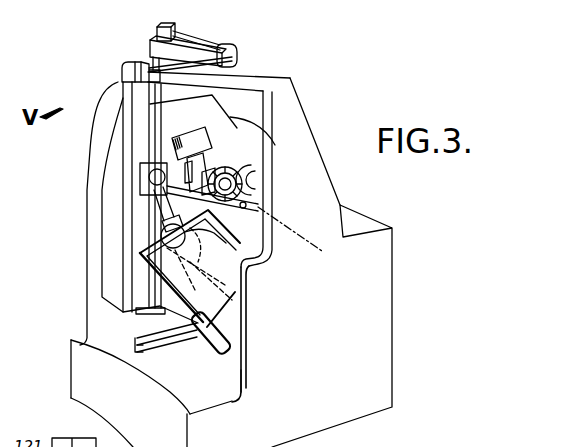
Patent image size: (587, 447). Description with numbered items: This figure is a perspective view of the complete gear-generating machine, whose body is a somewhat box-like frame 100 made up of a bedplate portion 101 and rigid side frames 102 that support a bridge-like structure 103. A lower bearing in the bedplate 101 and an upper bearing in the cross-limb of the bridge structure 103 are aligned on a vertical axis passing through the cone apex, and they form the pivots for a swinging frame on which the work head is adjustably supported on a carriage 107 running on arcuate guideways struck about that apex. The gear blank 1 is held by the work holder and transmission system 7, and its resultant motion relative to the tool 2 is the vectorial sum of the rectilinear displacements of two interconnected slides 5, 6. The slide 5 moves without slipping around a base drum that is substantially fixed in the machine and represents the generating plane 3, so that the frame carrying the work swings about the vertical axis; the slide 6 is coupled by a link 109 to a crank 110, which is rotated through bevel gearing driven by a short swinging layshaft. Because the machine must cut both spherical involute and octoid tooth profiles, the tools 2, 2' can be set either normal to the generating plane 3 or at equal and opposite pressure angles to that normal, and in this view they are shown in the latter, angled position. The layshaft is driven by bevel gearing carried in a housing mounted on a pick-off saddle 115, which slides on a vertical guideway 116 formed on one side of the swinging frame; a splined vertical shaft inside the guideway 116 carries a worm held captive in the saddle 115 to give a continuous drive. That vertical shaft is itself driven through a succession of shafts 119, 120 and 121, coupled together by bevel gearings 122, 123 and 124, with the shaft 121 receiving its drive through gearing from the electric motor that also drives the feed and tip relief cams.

The gear blank 1 is at (213, 208).
The tool 2 is at (248, 159).
The tool 2' is at (208, 147).
The generating plane 3 is at (250, 223).
The slide 5 is at (135, 346).
The slide 6 is at (193, 318).
The work holder and transmission system 7 is at (233, 249).
The frame 100 is at (392, 227).
The bedplate portion 101 is at (72, 366).
The side frames 102 is at (236, 376).
The bridge-like structure 103 is at (292, 80).
The carriage 107 is at (266, 248).
The link 109 is at (244, 291).
The crank 110 is at (140, 249).
The pick-off saddle 115 is at (143, 183).
The vertical guideway 116 is at (128, 125).
The shaft 119 is at (155, 64).
The shaft 120 is at (210, 44).
The shaft 121 is at (148, 66).
The bevel gearing 122 is at (176, 29).
The bevel gearing 123 is at (240, 56).
The bevel gearing 124 is at (125, 67).